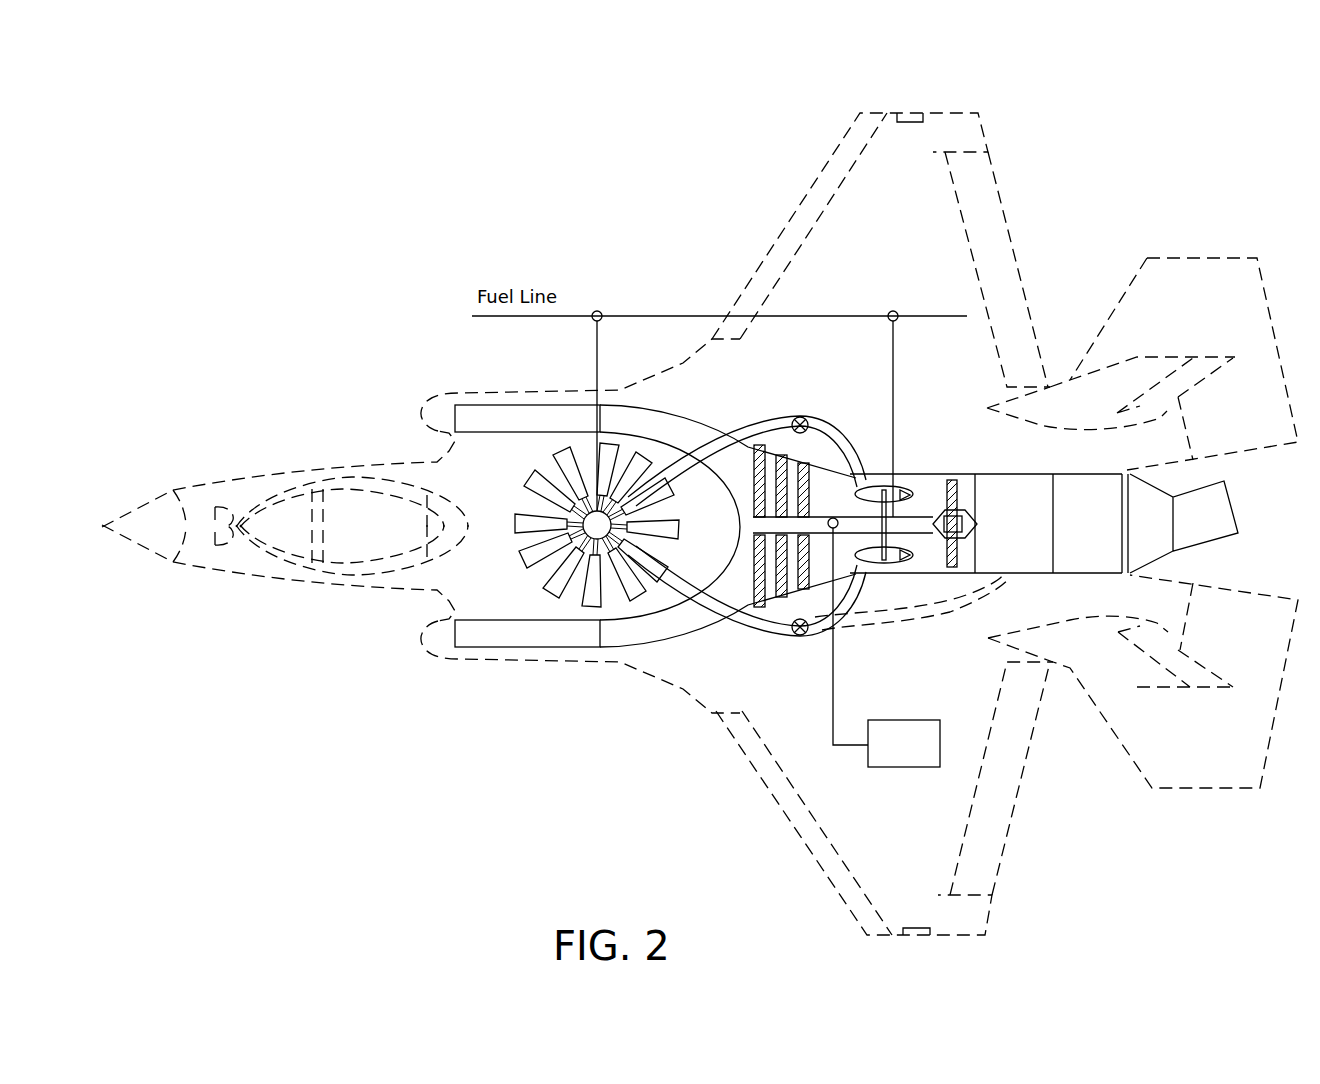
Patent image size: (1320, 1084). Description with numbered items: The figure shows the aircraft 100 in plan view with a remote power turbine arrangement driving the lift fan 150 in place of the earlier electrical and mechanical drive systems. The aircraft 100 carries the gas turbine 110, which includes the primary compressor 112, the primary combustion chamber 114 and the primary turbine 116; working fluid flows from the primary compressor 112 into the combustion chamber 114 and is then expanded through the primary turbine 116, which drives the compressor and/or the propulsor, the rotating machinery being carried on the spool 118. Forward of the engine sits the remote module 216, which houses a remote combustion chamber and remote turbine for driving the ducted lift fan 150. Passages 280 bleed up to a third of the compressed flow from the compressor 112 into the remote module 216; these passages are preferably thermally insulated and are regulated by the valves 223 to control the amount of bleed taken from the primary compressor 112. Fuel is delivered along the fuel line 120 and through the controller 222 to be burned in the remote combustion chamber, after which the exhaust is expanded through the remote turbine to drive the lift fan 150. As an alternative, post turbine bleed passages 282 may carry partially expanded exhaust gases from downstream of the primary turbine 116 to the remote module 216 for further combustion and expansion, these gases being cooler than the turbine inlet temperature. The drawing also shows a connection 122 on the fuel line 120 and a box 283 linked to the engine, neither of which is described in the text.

The aircraft 100 is at (1101, 102).
The gas turbine 110 is at (1020, 473).
The primary compressor 112 is at (768, 445).
The primary combustion chamber 114 is at (887, 564).
The primary turbine 116 is at (1003, 573).
The spool 118 is at (915, 522).
The fuel line 120 is at (655, 316).
The fuel supply connection to combustor 122 is at (893, 311).
The lift fan 150 is at (523, 553).
The remote module 216 is at (604, 595).
The controller 222 is at (597, 311).
The valve 223 is at (800, 417).
The passages 280 is at (752, 635).
The post turbine bleed passages 282 is at (913, 625).
The controller 283 is at (884, 642).